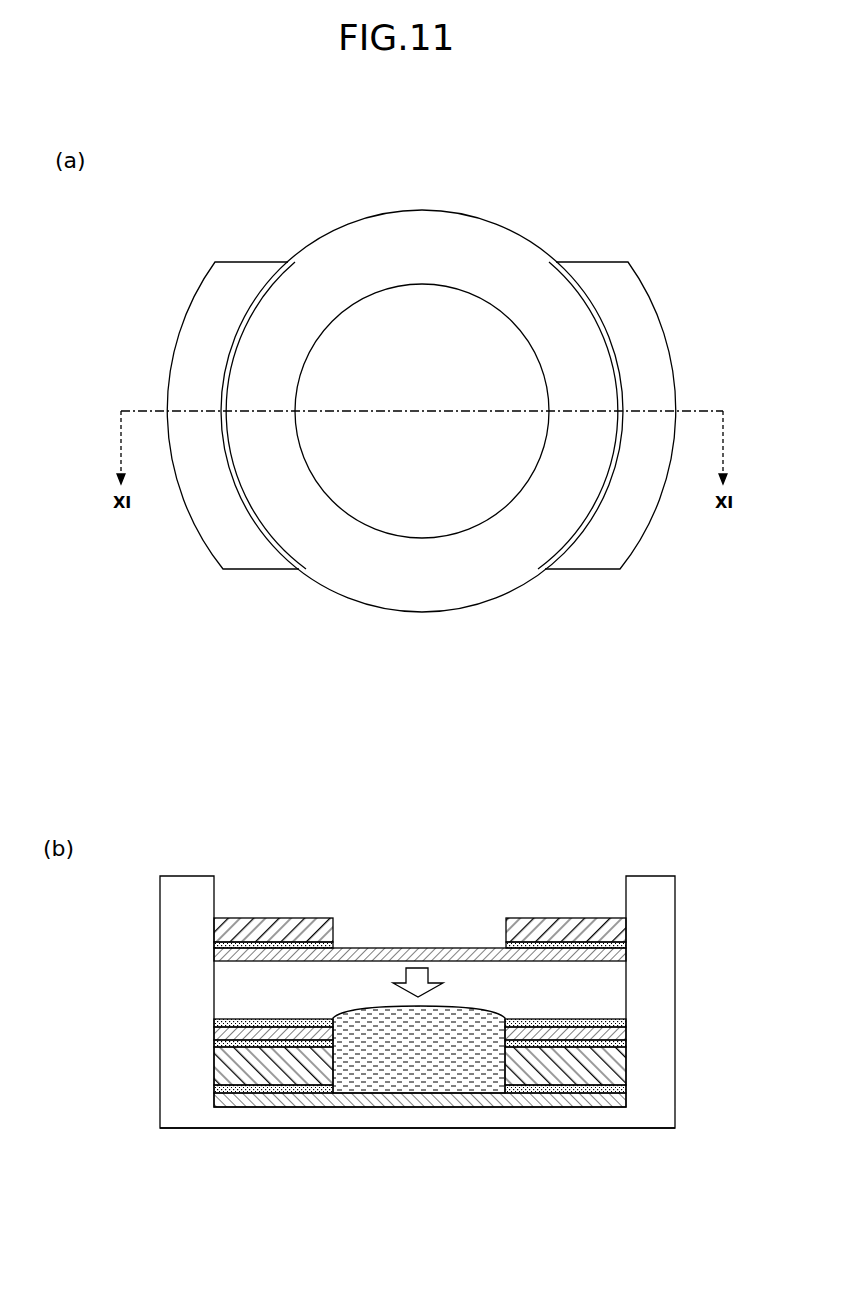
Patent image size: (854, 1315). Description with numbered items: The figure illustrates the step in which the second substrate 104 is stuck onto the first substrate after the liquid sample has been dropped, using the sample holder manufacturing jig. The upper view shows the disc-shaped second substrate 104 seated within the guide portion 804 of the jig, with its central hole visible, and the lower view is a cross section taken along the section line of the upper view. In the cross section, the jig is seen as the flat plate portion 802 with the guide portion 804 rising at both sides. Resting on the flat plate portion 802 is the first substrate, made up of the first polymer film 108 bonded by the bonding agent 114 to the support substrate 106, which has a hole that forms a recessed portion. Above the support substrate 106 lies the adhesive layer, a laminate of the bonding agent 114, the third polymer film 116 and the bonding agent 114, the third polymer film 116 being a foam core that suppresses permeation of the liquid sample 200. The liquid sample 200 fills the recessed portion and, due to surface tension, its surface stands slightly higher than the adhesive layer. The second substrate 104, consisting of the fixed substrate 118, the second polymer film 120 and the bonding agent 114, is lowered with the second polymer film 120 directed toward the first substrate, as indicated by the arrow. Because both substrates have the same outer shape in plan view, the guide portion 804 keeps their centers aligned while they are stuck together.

The second substrate 104 is at (421, 210).
The guide portion 804 is at (182, 333).
The fixed substrate 118 is at (214, 930).
The bonding agent 114 is at (214, 946).
The second polymer film 120 is at (214, 956).
The third polymer film 116 is at (214, 1033).
The support substrate 106 is at (214, 1062).
The first polymer film 108 is at (214, 1100).
The liquid sample 200 is at (503, 1082).
The flat plate portion 802 is at (385, 1120).